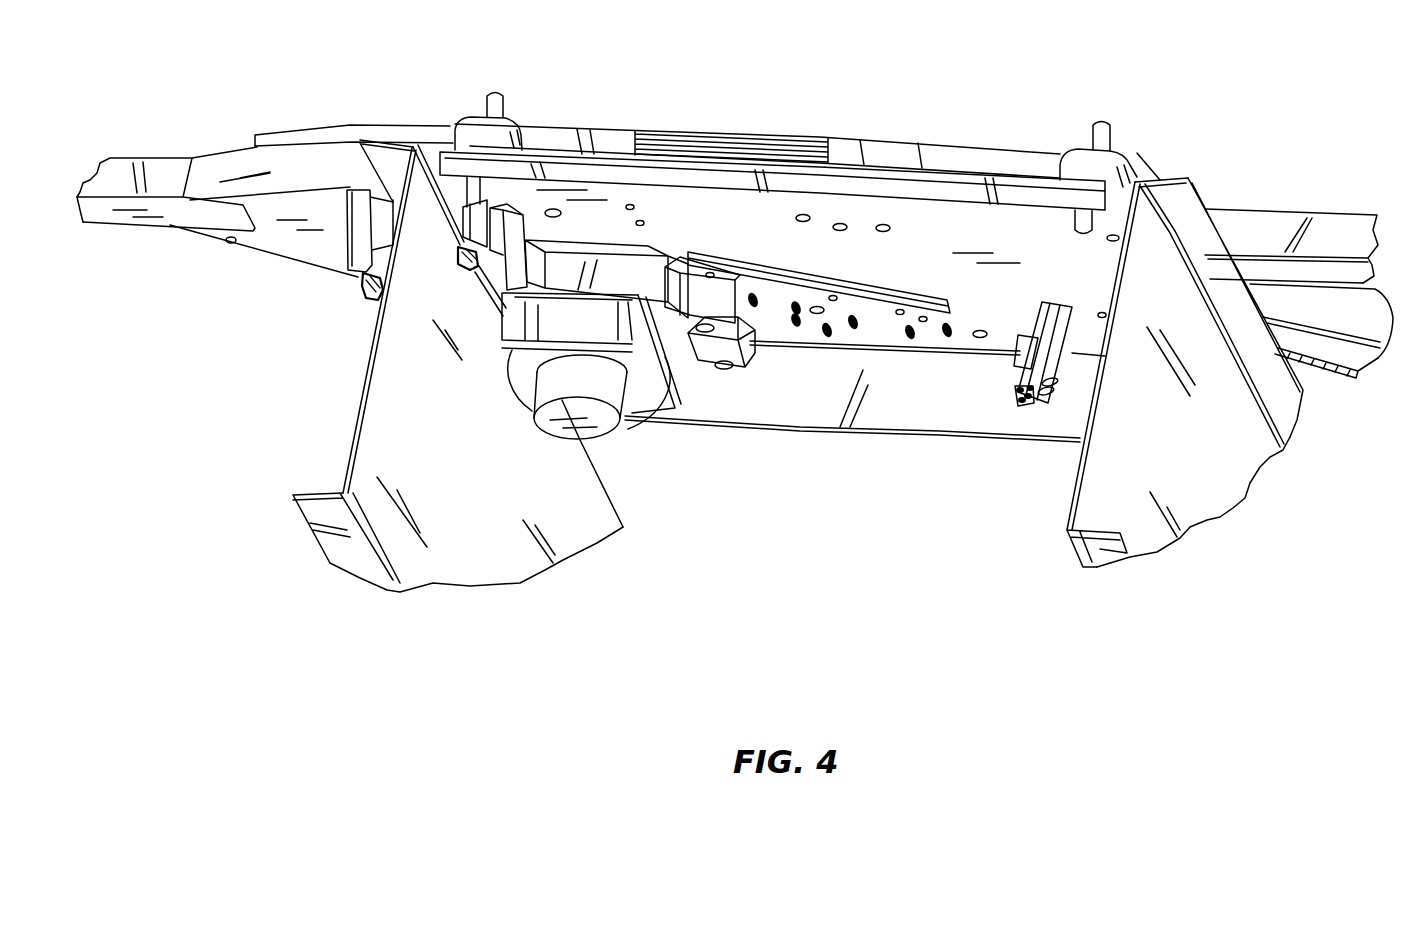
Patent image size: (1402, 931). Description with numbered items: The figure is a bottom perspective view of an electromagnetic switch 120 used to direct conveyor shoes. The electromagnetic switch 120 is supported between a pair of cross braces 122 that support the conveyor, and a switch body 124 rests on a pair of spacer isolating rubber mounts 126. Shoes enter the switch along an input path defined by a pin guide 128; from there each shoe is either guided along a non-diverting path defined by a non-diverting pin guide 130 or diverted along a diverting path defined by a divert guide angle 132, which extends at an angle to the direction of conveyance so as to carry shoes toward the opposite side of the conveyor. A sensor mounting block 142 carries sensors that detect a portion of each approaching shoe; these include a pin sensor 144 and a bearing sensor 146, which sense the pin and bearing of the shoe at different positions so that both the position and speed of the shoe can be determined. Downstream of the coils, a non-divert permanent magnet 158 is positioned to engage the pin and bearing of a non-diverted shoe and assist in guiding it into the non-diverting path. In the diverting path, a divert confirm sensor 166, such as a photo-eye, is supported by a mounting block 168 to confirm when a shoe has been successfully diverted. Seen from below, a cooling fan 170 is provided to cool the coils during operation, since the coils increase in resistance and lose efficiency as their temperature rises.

The electromagnetic switch 120 is at (838, 494).
The cross braces 122 is at (317, 503).
The switch body 124 is at (1033, 148).
The spacer isolating rubber mounts 126 is at (500, 95).
The pin guide 128 is at (160, 163).
The non-diverting pin guide 130 is at (1355, 218).
The divert guide angle 132 is at (1346, 347).
The sensor mounting block 142 is at (286, 137).
The pin sensor 144 is at (363, 285).
The bearing sensor 146 is at (463, 268).
The non-divert permanent magnet 158 is at (657, 128).
The divert confirm sensor 166 is at (1063, 307).
The mounting block 168 is at (1019, 408).
The cooling fan 170 is at (648, 405).